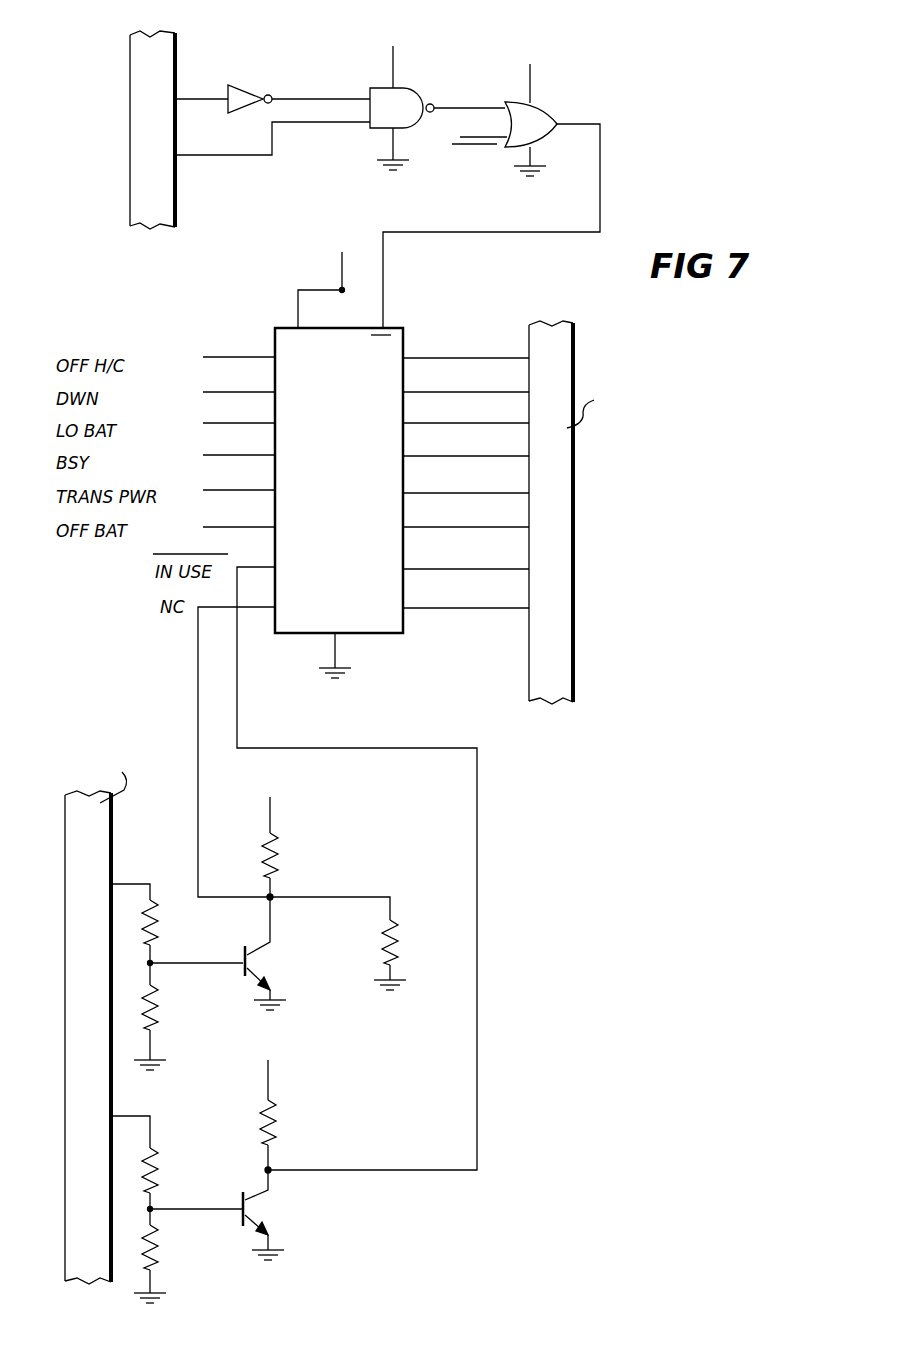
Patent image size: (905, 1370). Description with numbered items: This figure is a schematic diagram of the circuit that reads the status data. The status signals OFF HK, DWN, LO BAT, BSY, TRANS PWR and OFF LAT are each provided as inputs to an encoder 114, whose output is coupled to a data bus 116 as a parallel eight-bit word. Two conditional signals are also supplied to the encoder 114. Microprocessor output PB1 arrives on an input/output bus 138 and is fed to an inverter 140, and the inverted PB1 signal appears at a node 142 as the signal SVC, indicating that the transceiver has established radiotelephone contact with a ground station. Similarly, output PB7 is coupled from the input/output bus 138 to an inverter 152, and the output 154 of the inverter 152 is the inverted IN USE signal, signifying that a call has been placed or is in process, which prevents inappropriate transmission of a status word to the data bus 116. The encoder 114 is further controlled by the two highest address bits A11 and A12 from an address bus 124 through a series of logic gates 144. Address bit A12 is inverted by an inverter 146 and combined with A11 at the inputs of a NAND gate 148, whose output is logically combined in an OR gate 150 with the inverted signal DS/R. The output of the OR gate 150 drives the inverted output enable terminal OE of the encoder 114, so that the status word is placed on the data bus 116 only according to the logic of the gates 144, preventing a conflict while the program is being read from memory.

The address bus 124 is at (165, 68).
The inverter 146 is at (240, 92).
The logic gates 144 is at (440, 70).
The NAND gate 148 is at (385, 132).
The OR gate 150 is at (597, 85).
The encoder 114 is at (386, 637).
The data bus 116 is at (567, 650).
The input/output bus 138 is at (100, 838).
The node 142 is at (273, 896).
The inverter 140 is at (276, 965).
The output 154 is at (270, 1168).
The inverter 152 is at (282, 1206).